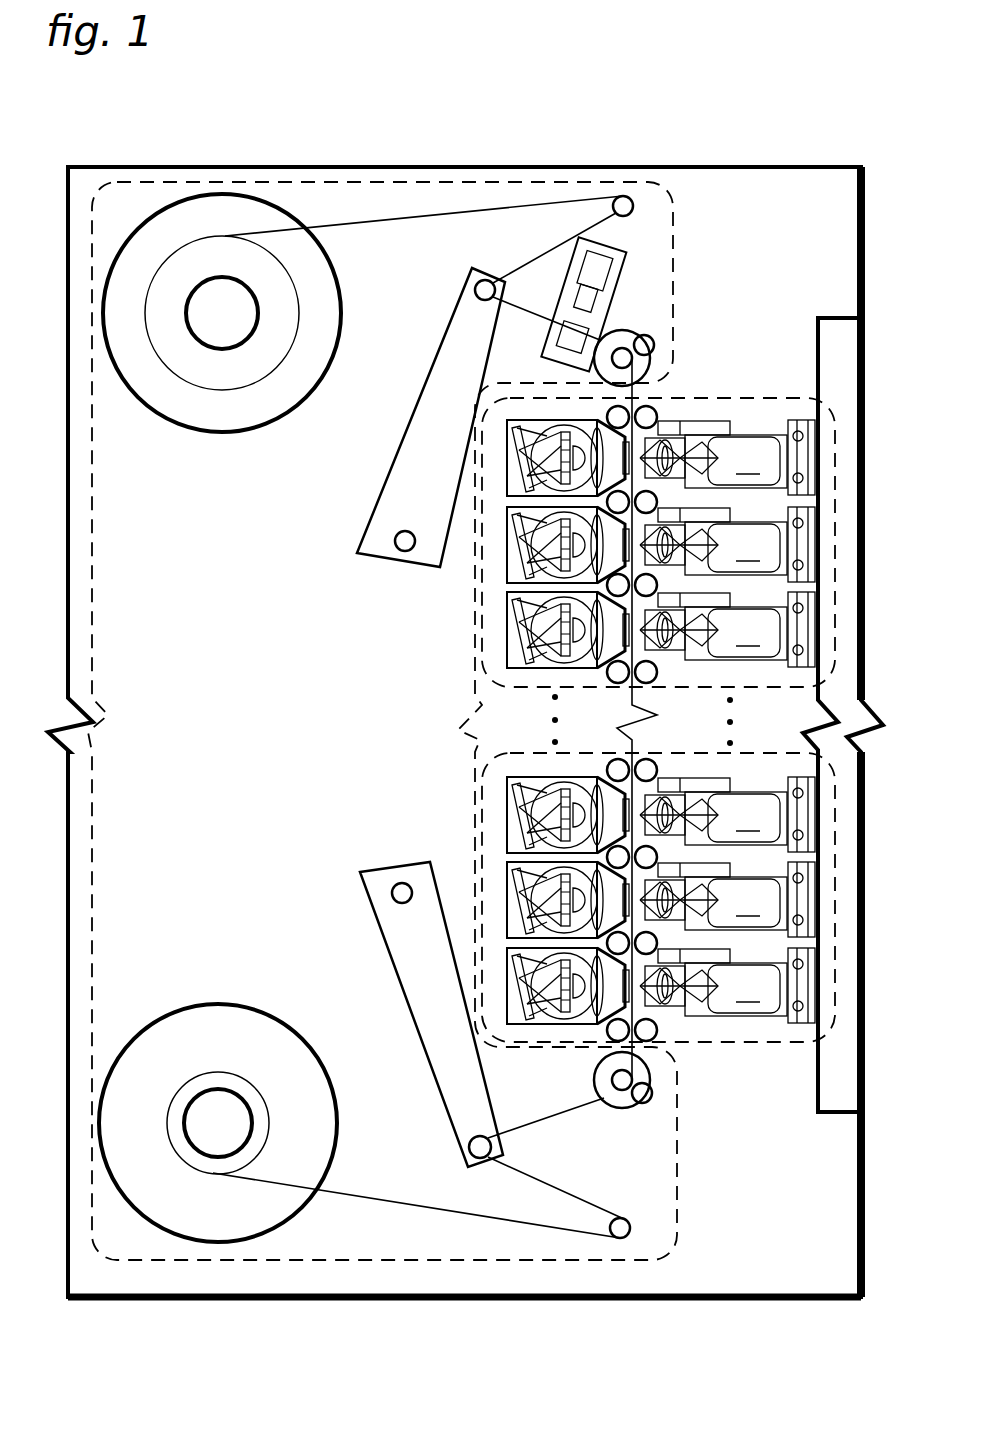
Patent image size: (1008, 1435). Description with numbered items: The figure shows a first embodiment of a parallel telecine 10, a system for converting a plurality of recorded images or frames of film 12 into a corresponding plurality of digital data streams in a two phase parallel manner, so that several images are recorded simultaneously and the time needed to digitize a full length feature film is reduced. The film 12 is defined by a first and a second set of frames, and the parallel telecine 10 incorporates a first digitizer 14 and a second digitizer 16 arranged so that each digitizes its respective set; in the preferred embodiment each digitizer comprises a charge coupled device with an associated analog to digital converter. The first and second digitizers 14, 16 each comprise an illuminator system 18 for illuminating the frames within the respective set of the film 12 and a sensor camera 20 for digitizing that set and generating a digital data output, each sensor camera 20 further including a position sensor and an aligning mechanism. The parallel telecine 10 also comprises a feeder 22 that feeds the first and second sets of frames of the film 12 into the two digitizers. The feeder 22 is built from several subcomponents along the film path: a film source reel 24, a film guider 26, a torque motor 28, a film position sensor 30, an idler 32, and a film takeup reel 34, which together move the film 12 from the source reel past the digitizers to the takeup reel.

The parallel telecine 10 is at (465, 684).
The film 12 is at (398, 1212).
The first digitizer 14 is at (848, 508).
The second digitizer 16 is at (845, 960).
The illuminator system 18 is at (727, 721).
The sensor camera 20 is at (507, 428).
The feeder 22 is at (678, 1207).
The film source reel 24 is at (208, 1006).
The film guider 26 is at (658, 1038).
The torque motor 28 is at (633, 334).
The film position sensor 30 is at (618, 258).
The idler 32 is at (475, 287).
The film takeup reel 34 is at (221, 430).